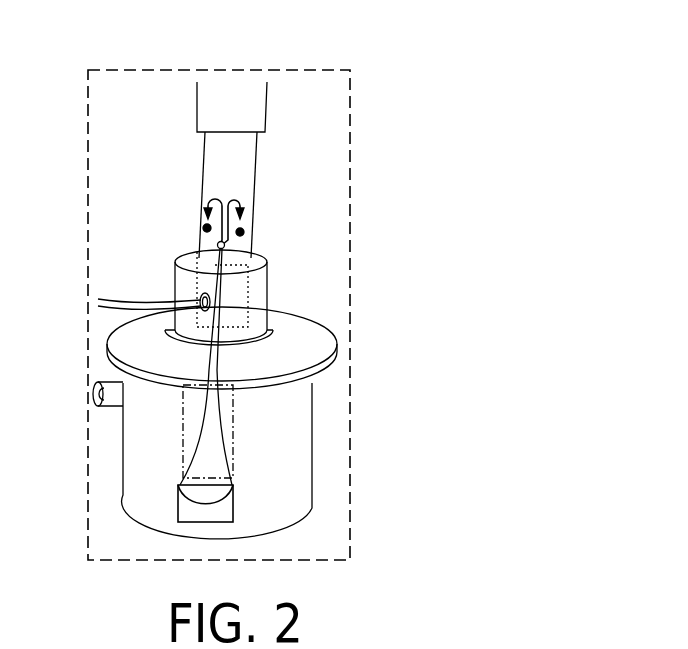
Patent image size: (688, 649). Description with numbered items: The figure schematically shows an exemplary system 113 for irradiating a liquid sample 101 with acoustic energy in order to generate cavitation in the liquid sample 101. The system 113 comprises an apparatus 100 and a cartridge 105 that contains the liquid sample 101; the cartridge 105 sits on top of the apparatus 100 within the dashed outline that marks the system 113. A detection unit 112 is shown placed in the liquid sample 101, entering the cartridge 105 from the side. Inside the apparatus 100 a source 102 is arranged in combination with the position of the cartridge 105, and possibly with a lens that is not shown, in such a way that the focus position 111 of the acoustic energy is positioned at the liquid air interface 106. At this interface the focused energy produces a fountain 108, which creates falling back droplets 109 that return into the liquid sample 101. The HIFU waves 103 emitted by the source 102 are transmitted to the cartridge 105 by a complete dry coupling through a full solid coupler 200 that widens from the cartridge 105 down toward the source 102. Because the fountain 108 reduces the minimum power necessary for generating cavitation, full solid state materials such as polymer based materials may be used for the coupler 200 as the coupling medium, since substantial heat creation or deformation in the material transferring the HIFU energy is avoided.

The apparatus 100 is at (123, 442).
The liquid sample 101 is at (232, 318).
The source 102 is at (233, 503).
The HIFU waves 103 is at (233, 452).
The cartridge 105 is at (257, 150).
The liquid air interface 106 is at (224, 244).
The fountain 108 is at (232, 200).
The falling back droplets 109 is at (200, 234).
The focus position 111 is at (248, 273).
The detection unit 112 is at (200, 300).
The system 113 is at (465, 101).
The full solid coupler 200 is at (233, 410).